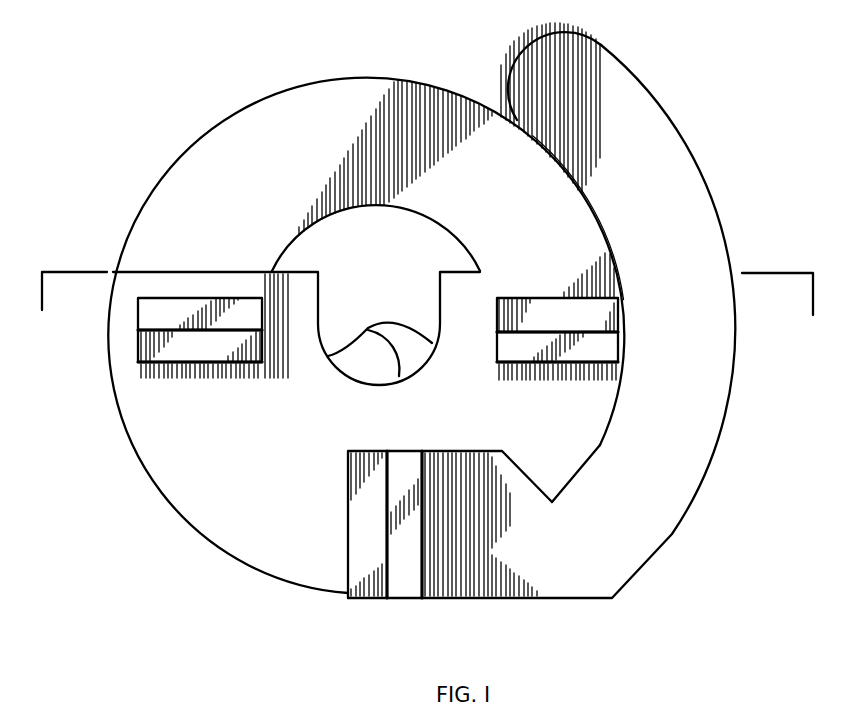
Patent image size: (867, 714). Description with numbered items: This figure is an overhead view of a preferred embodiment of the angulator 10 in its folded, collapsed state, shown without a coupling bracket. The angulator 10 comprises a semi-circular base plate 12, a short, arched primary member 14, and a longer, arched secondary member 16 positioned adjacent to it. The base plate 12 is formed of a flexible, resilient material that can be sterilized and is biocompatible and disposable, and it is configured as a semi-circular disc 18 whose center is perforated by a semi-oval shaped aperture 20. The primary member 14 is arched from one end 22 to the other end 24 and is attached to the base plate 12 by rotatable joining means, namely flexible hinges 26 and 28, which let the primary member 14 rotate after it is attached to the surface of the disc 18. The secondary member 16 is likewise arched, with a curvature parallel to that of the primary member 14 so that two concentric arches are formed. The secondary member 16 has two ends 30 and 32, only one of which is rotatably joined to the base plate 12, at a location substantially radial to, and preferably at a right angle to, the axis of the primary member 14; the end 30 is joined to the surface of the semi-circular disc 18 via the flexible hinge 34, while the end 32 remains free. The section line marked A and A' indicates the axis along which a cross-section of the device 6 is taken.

The rotor assembly 6 is at (105, 315).
The angulator 10 is at (670, 535).
The base plate 12 is at (197, 533).
The primary member 14 is at (331, 131).
The secondary member 16 is at (678, 417).
The semi-circular disc 18 is at (292, 495).
The aperture 20 is at (380, 334).
The end 22 is at (220, 297).
The end 24 is at (557, 297).
The flexible hinge 26 is at (178, 374).
The flexible hinge 28 is at (587, 375).
The end 30 is at (420, 564).
The end 32 is at (523, 45).
The flexible hinge 34 is at (348, 572).